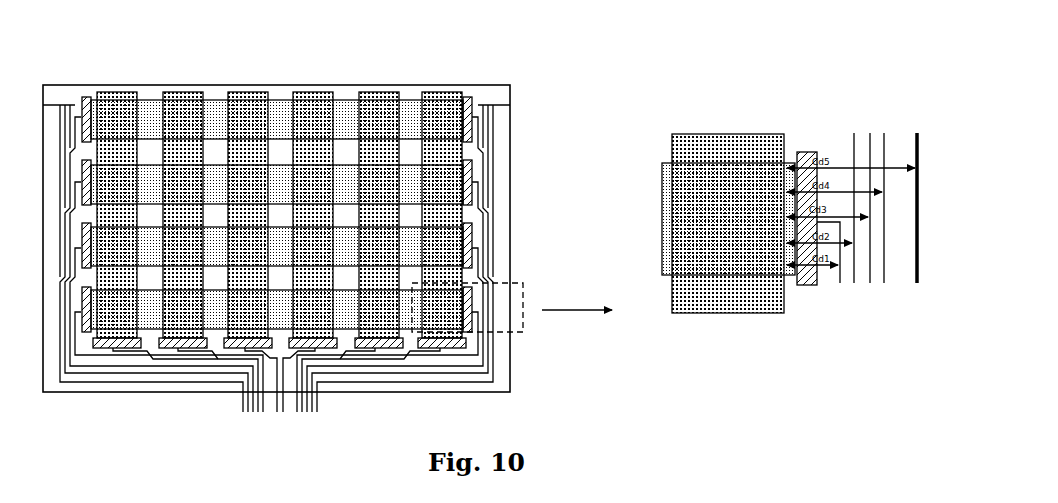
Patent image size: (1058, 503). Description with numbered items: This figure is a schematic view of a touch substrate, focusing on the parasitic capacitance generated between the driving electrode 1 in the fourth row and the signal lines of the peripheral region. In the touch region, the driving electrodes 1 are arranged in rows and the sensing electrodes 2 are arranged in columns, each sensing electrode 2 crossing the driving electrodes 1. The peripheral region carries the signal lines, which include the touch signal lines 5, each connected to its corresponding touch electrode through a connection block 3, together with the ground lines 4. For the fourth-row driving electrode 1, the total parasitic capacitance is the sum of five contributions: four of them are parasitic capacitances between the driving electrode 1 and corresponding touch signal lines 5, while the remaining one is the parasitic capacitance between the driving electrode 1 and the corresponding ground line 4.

The driving electrode 1 is at (243, 107).
The sensing electrode 2 is at (313, 93).
The connection block 3 is at (465, 100).
The ground line 4 is at (495, 188).
The touch signal line 5 is at (483, 245).